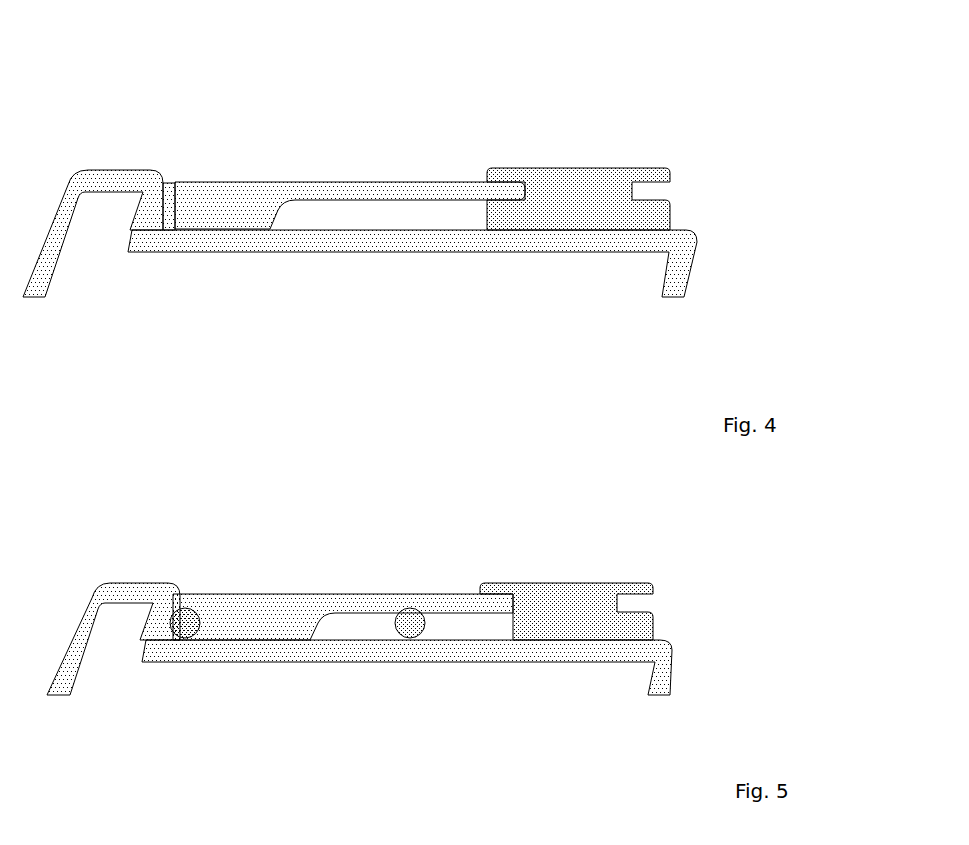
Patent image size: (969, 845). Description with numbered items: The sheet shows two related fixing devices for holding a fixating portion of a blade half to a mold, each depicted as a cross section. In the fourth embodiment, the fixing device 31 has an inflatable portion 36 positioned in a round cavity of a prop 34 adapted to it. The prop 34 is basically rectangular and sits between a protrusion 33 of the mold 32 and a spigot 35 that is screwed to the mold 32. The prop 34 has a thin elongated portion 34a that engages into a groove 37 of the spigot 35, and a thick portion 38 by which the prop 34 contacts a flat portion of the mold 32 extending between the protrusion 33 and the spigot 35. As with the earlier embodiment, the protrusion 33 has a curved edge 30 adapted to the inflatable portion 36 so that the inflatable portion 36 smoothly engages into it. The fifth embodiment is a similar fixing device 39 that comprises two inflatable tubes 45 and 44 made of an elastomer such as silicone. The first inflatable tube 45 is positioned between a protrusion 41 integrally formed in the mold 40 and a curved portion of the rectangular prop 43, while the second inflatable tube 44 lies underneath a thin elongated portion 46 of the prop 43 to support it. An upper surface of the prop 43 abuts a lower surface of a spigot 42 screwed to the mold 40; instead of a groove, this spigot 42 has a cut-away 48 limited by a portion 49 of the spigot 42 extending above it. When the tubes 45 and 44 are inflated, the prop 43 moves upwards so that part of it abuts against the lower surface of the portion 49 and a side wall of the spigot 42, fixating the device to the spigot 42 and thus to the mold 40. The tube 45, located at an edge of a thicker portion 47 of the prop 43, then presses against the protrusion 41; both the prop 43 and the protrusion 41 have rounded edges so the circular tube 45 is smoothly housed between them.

In FIG. 4, the curved edge 30 is at (160, 233).
In FIG. 4, the fixing device 31 is at (400, 40).
In FIG. 4, the mold 32 is at (690, 240).
In FIG. 4, the protrusion 33 is at (115, 172).
In FIG. 4, the prop 34 is at (288, 183).
In FIG. 4, the thin elongated portion 34a is at (436, 163).
In FIG. 4, the spigot 35 is at (565, 168).
In FIG. 4, the inflatable portion 36 is at (167, 185).
In FIG. 4, the groove 37 is at (473, 208).
In FIG. 4, the thick portion 38 is at (247, 145).
In FIG. 5, the fixing device 39 is at (402, 452).
In FIG. 5, the mold 40 is at (668, 650).
In FIG. 5, the protrusion 41 is at (123, 585).
In FIG. 5, the spigot 42 is at (540, 582).
In FIG. 5, the prop 43 is at (280, 595).
In FIG. 5, the second inflatable tube 44 is at (410, 640).
In FIG. 5, the first inflatable tube 45 is at (178, 640).
In FIG. 5, the thin elongated portion 46 is at (434, 555).
In FIG. 5, the thicker portion 47 is at (238, 560).
In FIG. 5, the cut-away 48 is at (490, 638).
In FIG. 5, the portion of the spigot 49 is at (512, 558).